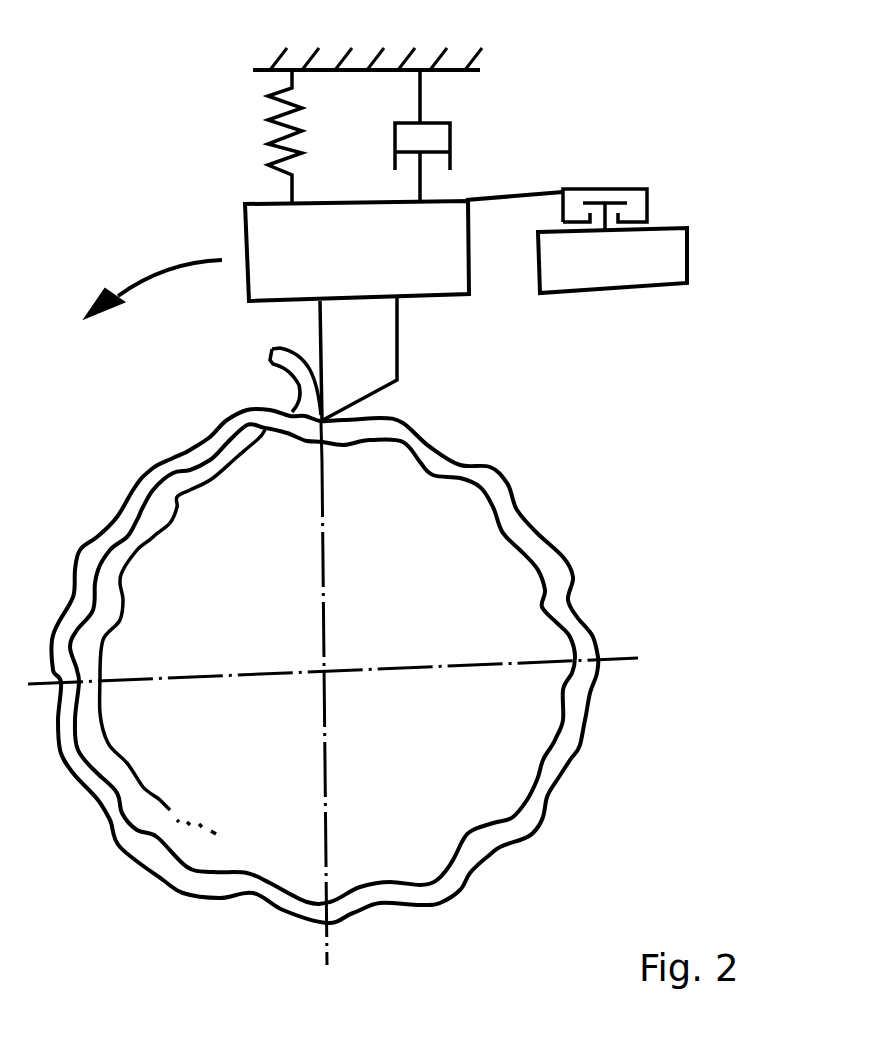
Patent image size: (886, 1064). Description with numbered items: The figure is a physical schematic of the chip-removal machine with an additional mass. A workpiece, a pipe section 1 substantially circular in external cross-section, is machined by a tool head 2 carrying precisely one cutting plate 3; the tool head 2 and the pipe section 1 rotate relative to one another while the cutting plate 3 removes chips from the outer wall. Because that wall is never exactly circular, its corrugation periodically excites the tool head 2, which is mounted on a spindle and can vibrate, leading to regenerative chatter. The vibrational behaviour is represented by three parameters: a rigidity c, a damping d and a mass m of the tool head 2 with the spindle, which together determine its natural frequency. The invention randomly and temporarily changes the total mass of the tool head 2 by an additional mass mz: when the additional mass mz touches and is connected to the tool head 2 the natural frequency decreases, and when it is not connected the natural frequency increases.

The pipe section 1 is at (562, 600).
The tool head 2 is at (517, 162).
The cutting plate 3 is at (360, 340).
The rigidity c is at (260, 139).
The damping d is at (425, 135).
The mass m is at (412, 262).
The additional mass mz is at (668, 258).